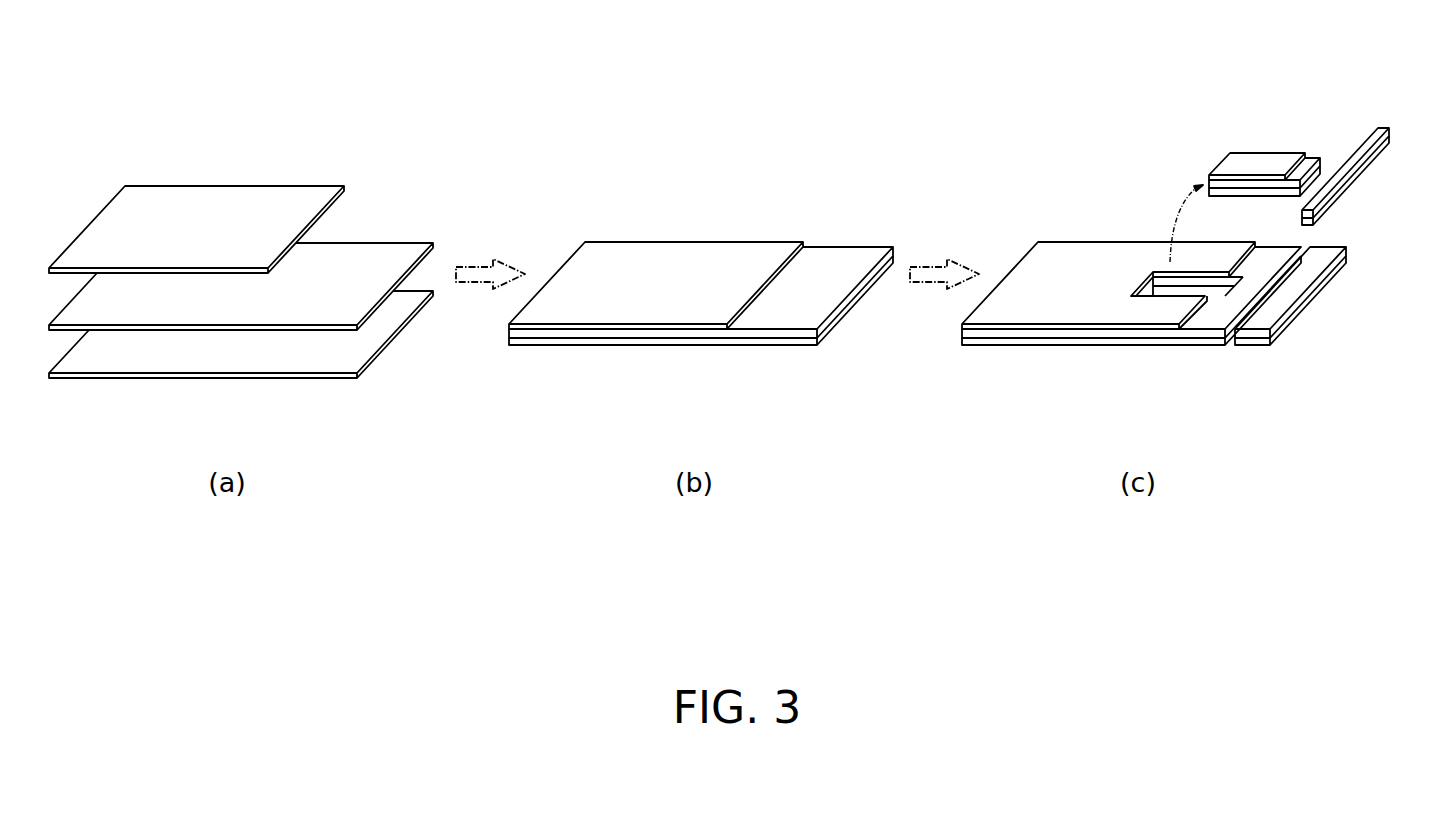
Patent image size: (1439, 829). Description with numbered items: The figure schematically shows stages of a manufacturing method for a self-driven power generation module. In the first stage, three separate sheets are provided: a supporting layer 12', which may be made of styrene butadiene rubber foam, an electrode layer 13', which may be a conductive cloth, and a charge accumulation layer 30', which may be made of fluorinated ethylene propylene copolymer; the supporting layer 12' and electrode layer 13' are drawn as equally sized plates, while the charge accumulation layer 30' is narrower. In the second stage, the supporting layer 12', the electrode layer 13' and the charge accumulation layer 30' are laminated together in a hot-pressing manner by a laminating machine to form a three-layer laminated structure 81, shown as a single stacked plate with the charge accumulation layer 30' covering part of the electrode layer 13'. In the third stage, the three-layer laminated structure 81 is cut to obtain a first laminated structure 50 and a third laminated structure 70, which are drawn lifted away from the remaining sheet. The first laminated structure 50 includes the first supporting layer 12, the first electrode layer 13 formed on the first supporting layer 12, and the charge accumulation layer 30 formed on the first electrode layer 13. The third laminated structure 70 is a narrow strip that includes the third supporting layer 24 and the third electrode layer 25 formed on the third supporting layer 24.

The charge accumulation layer 30' is at (652, 226).
The electrode layer 13' is at (715, 258).
The supporting layer 12' is at (697, 350).
The three-layer laminated structure 81 is at (573, 165).
The first laminated structure 50 is at (1247, 157).
The charge accumulation layer 30 is at (1257, 130).
The first electrode layer 13 is at (1266, 141).
The first supporting layer 12 is at (1264, 201).
The third laminated structure 70 is at (1361, 143).
The third electrode layer 25 is at (1348, 176).
The third supporting layer 24 is at (1330, 205).